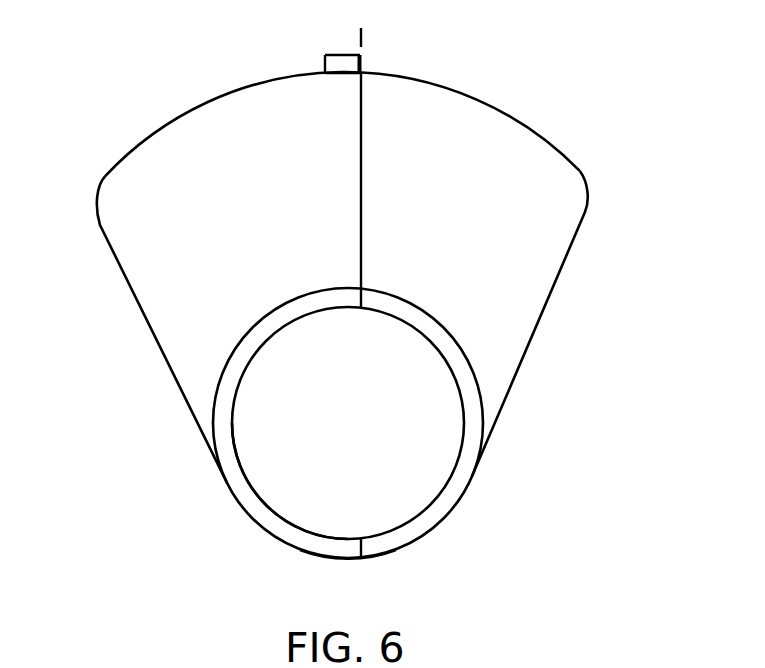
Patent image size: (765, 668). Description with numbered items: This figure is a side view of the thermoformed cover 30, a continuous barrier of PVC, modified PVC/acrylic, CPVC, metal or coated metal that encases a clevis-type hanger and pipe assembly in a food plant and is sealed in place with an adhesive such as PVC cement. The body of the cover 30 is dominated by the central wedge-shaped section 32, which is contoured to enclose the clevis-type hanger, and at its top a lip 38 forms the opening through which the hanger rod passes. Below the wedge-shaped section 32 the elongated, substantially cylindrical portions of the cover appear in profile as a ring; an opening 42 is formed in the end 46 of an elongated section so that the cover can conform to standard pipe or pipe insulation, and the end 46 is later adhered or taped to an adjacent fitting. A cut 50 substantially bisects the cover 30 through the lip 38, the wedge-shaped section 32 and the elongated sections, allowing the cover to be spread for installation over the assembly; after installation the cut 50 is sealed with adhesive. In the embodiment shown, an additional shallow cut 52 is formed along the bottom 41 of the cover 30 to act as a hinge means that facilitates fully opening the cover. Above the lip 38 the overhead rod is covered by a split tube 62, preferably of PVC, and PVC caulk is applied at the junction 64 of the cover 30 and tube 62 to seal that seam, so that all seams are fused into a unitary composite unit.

The cover 30 is at (124, 70).
The central wedge-shaped section 32 is at (577, 232).
The lip 38 is at (361, 63).
The bottom 41 is at (348, 558).
The opening 42 is at (312, 512).
The end 46 is at (444, 492).
The cut 50 is at (362, 195).
The shallow cut 52 is at (483, 402).
The split tube 62 is at (324, 50).
The junction 64 is at (324, 58).